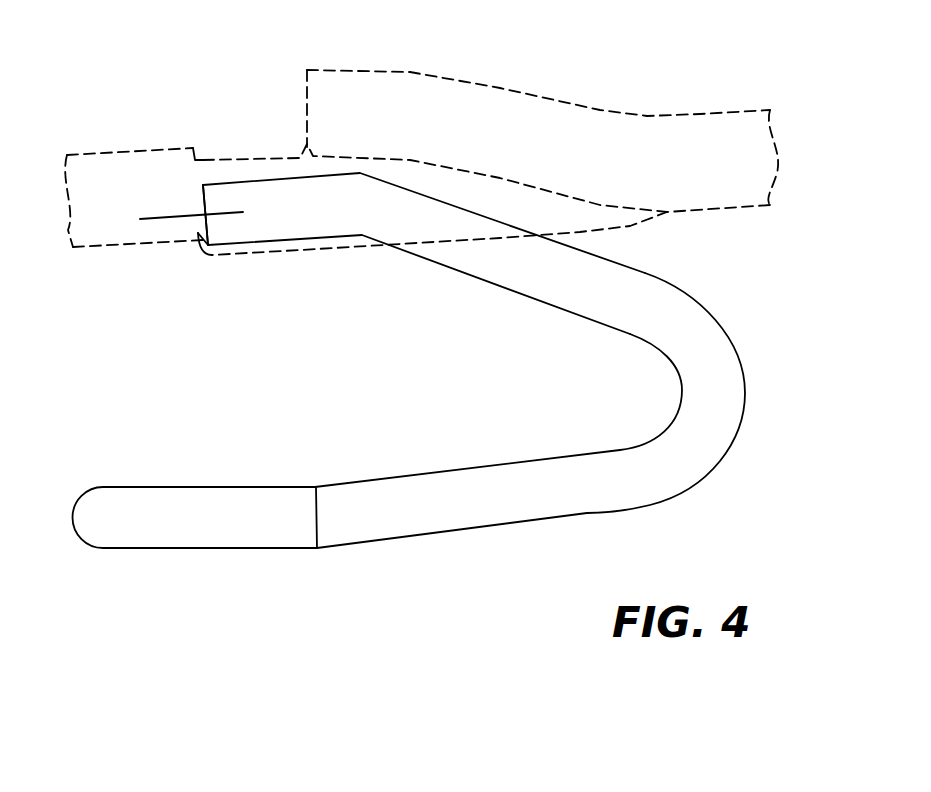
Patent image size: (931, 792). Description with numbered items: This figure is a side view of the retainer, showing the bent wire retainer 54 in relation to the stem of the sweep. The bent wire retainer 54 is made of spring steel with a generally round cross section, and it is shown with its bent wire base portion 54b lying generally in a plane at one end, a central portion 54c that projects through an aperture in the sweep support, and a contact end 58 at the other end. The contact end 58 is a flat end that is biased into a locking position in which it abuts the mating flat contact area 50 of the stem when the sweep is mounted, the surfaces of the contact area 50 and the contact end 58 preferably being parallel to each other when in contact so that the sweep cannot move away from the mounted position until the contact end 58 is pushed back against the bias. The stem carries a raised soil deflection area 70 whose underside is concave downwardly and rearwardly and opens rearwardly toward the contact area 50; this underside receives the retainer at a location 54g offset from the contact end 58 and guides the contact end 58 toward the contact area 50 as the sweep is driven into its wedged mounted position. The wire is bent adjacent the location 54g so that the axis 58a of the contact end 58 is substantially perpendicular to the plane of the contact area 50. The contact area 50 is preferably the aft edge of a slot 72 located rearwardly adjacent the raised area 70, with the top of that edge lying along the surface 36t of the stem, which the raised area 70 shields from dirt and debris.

The raised soil deflection area 70 is at (473, 57).
The slot 72 is at (260, 158).
The surface of the stem 36t is at (157, 148).
The contact area 50 is at (198, 232).
The contact end 58 is at (199, 235).
The axis of the end 58a is at (170, 217).
The bent wire retainer 54 is at (444, 360).
The location offset from the end 54g is at (357, 220).
The central portion 54c is at (742, 362).
The bent wire base portion 54b is at (93, 503).